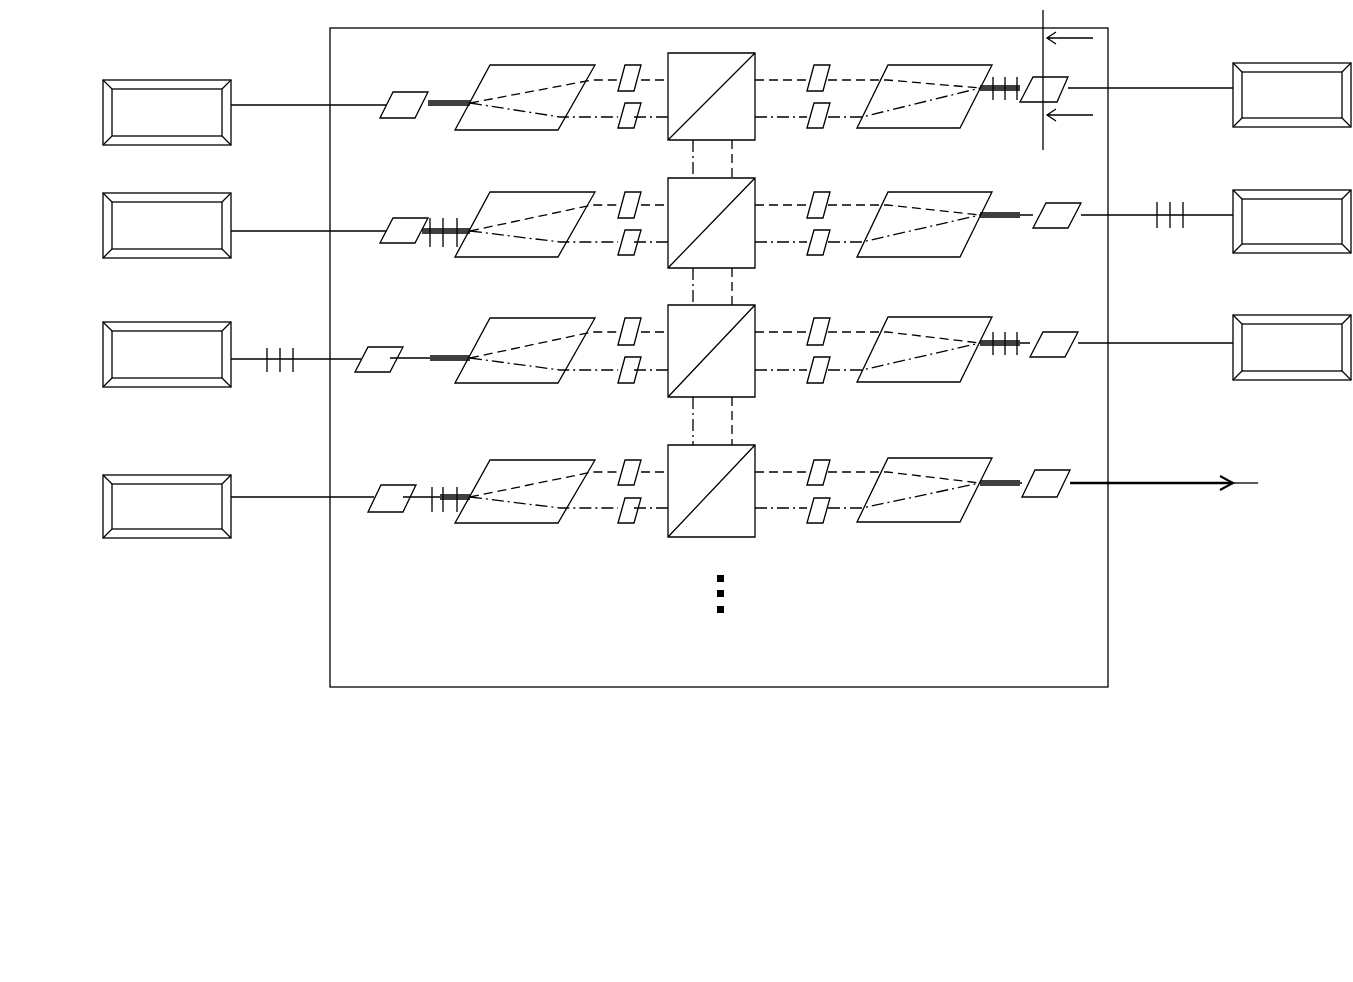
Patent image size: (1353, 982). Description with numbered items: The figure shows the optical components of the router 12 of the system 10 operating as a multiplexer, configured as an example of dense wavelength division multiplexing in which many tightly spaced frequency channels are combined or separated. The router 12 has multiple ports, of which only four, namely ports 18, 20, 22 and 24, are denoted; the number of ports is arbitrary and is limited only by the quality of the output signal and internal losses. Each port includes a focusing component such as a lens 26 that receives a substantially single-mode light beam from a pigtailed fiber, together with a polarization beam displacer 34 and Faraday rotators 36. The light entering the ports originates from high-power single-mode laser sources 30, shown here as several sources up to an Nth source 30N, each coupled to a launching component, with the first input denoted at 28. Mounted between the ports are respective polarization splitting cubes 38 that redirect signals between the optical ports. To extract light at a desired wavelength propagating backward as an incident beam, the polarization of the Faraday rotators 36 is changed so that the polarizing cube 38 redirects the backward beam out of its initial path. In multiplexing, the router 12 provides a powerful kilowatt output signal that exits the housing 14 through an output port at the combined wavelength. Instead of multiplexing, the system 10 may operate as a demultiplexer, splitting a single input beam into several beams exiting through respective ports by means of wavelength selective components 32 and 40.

The system 10 is at (1135, 622).
The router 12 is at (455, 638).
The housing 14 is at (620, 662).
The port 18 is at (318, 90).
The port 20 is at (1120, 73).
The port 22 is at (327, 232).
The port 24 is at (1123, 470).
The lens 26 is at (403, 105).
The input port 28 is at (342, 106).
The HP SM laser source 30 is at (193, 232).
The Nth laser source 30N is at (117, 487).
The wavelength selective component 32 is at (1007, 115).
The polarization beam displacer 34 is at (518, 80).
The Faraday rotator 36 is at (818, 78).
The polarization splitting cube 38 is at (707, 78).
The wavelength selective component 40 is at (1167, 210).